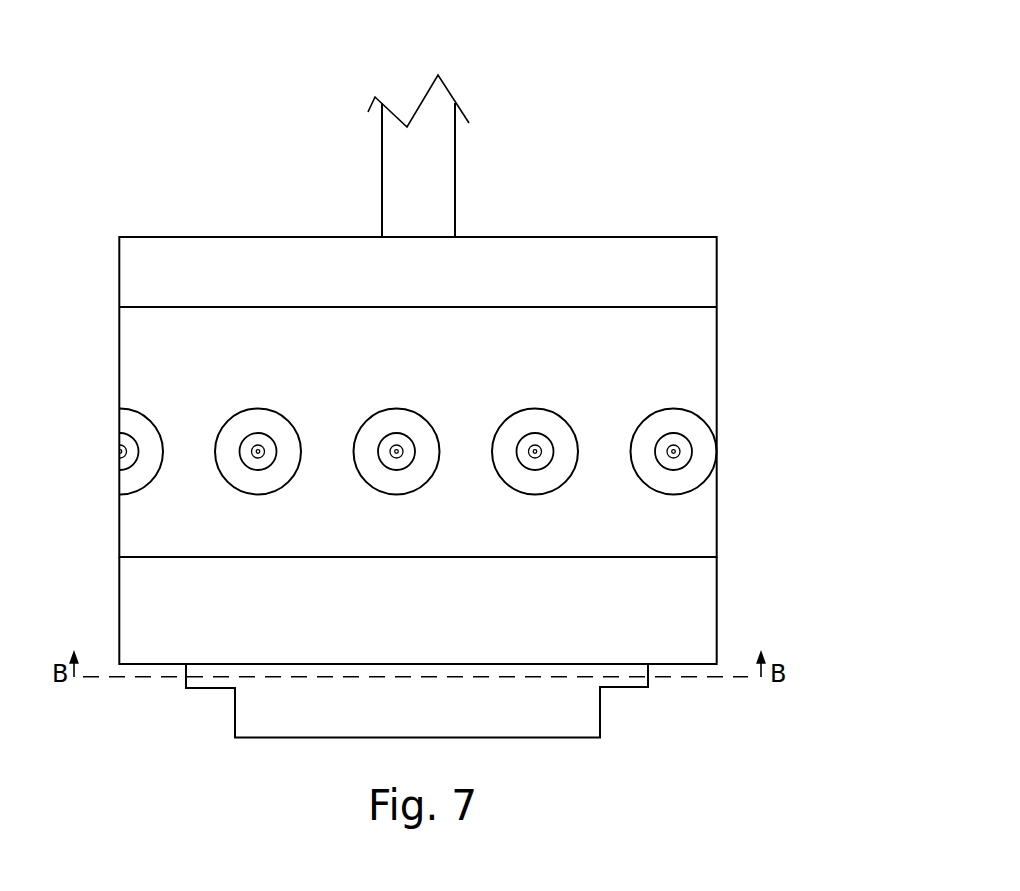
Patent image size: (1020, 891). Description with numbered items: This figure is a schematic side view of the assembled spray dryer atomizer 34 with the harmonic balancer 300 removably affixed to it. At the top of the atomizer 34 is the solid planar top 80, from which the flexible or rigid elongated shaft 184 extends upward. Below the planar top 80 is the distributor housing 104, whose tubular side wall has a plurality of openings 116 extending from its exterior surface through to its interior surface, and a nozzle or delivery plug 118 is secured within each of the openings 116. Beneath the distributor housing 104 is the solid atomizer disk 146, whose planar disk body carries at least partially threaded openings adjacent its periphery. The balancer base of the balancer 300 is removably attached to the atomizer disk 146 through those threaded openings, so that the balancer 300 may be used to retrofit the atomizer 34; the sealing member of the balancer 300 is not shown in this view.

The rotary type atomizer 34 is at (643, 125).
The elongated shaft 184 is at (442, 182).
The planar top 80 is at (705, 274).
The openings 116 is at (535, 408).
The nozzle or delivery plug 118 is at (705, 450).
The distributor housing 104 is at (705, 527).
The atomizer disk 146 is at (705, 607).
The balancer 300 is at (587, 713).